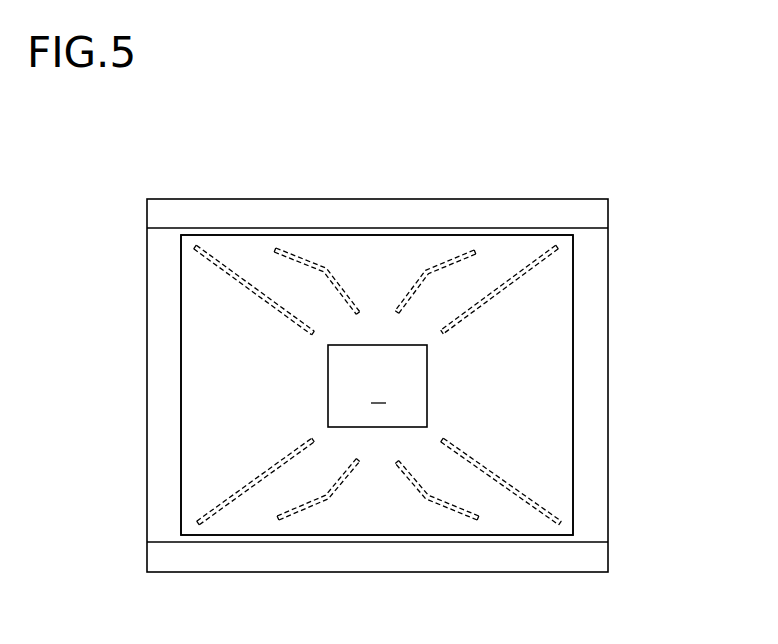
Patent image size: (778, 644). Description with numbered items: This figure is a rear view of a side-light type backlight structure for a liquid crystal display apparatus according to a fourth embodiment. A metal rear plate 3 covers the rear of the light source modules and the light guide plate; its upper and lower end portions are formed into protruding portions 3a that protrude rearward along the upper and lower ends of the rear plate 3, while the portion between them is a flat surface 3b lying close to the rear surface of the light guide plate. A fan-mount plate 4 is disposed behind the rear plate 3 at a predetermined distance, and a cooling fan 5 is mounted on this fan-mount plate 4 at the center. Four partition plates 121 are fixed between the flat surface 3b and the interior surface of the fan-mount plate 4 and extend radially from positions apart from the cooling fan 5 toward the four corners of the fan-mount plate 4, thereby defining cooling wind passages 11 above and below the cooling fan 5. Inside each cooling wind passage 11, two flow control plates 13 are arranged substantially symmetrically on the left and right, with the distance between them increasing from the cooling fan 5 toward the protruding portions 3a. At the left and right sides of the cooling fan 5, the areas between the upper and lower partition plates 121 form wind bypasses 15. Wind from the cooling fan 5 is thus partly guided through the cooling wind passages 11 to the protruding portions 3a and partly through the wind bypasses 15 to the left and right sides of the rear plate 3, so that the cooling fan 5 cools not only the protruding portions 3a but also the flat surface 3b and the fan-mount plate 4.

The rear plate 3 is at (527, 199).
The protruding portions 3a is at (587, 214).
The flat surface 3b is at (587, 525).
The fan-mount plate 4 is at (503, 418).
The cooling fan 5 is at (377, 386).
The cooling wind passages 11 is at (377, 278).
The flow control plates 13 is at (327, 270).
The wind bypasses 15 is at (250, 387).
The partition plates 121 is at (250, 287).